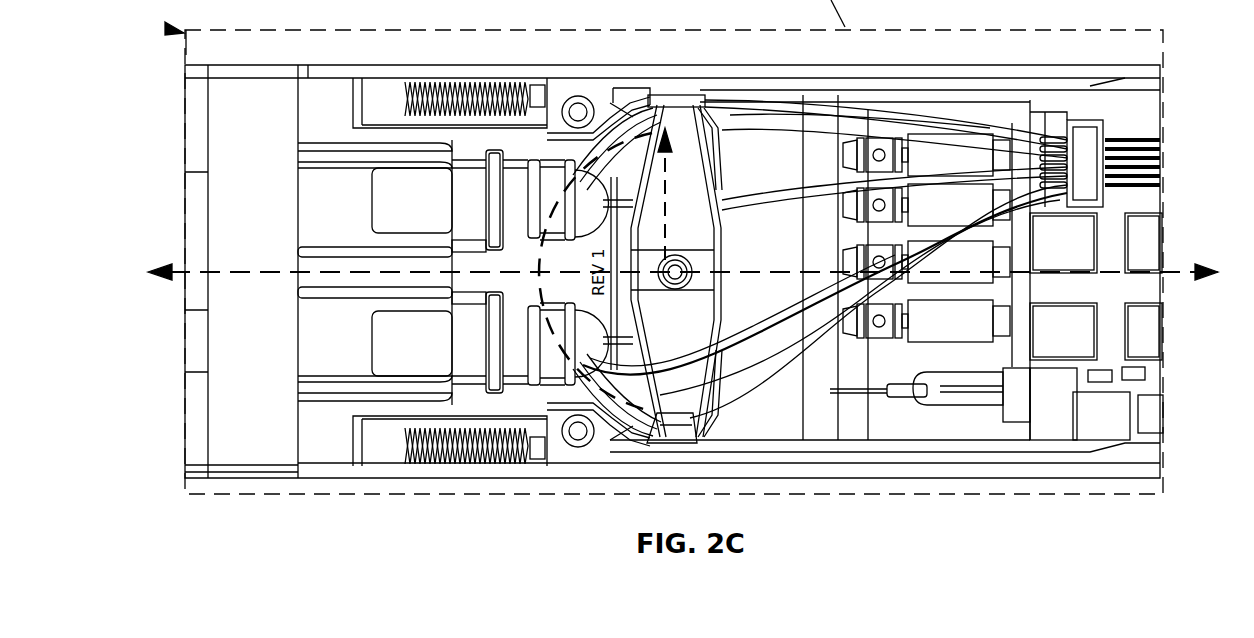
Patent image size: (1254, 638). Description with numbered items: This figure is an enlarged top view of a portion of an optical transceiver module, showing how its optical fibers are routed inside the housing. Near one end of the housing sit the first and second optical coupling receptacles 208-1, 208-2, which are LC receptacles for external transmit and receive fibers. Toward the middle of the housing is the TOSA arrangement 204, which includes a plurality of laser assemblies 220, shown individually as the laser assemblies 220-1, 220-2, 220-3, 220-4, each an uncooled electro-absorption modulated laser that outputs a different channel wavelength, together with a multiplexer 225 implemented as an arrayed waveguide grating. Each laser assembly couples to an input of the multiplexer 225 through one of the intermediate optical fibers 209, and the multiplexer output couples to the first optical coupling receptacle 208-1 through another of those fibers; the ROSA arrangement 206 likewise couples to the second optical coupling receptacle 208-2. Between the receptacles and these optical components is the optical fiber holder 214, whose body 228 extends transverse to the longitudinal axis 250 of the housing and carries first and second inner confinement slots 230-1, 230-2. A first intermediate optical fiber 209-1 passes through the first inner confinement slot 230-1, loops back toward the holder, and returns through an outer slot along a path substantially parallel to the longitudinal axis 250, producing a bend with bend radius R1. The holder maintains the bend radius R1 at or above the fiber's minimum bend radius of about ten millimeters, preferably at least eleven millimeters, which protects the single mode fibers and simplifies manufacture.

The TOSA arrangement 204 is at (978, 118).
The ROSA arrangement 206 is at (1037, 397).
The first optical coupling receptacle 208-1 is at (474, 180).
The second optical coupling receptacle 208-2 is at (423, 344).
The plurality of intermediate optical fibers 209 is at (785, 212).
The first intermediate optical fiber 209-1 is at (737, 124).
The optical fiber holder 214 is at (706, 356).
The plurality of laser assemblies 220 is at (926, 352).
The laser assembly 220-1 is at (975, 165).
The laser assembly 220-2 is at (975, 215).
The laser assembly 220-3 is at (975, 272).
The laser assembly 220-4 is at (975, 331).
The multiplexer 225 is at (1146, 168).
The body 228 is at (693, 425).
The first inner confinement slot 230-1 is at (668, 367).
The second inner confinement slot 230-2 is at (689, 166).
The longitudinal axis 250 is at (1200, 283).
The bend radius R1 is at (676, 194).